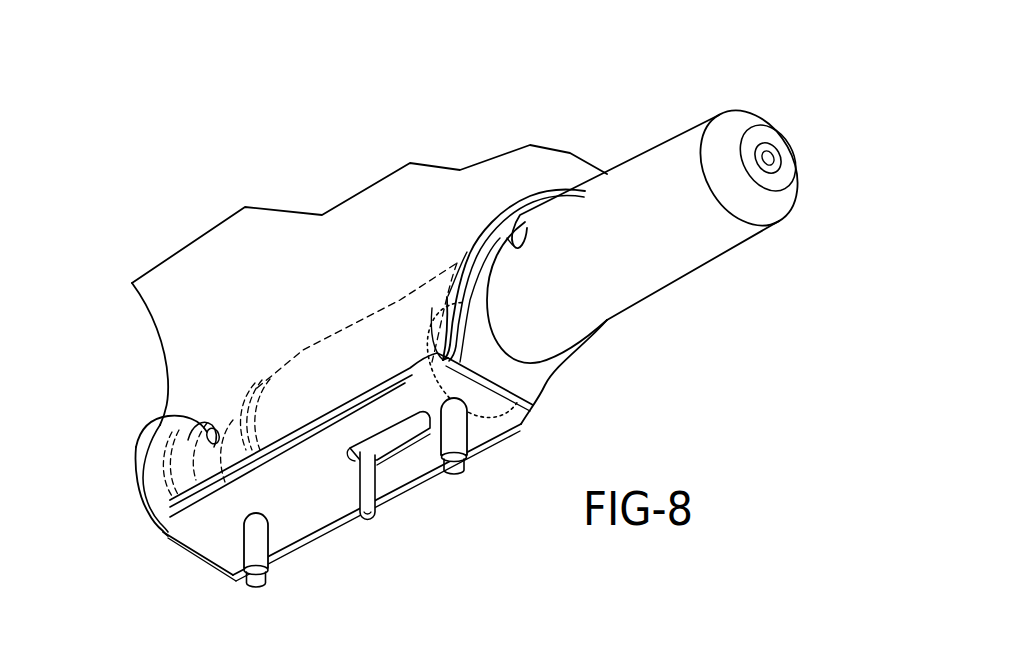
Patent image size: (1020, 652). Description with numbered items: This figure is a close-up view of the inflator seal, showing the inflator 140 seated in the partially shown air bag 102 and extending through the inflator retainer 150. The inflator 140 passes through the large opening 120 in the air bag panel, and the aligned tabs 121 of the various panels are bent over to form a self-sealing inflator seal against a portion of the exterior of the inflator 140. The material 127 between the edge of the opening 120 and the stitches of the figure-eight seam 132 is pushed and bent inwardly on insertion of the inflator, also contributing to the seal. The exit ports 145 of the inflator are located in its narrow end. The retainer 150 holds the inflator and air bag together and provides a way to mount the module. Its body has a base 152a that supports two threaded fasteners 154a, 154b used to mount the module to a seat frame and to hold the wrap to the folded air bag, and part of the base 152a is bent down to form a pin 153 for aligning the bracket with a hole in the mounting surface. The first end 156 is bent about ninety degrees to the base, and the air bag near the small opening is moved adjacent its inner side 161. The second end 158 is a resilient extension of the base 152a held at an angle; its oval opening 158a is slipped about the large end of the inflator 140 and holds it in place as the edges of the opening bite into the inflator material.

The mounting body 102 is at (193, 270).
The large opening 120 is at (445, 297).
The tab 121 is at (515, 424).
The material 127 is at (507, 238).
The figure-8 seam 132 is at (432, 308).
The inflator 140 is at (307, 347).
The exit ports 145 is at (209, 427).
The retainer 150 is at (313, 498).
The base 152a is at (213, 532).
The pin 153 is at (377, 515).
The threaded fastener 154a is at (250, 553).
The threaded fastener 154b is at (455, 432).
The first end 156 is at (152, 452).
The second end 158 is at (530, 203).
The oval opening 158a is at (467, 252).
The inner side 161 is at (150, 475).